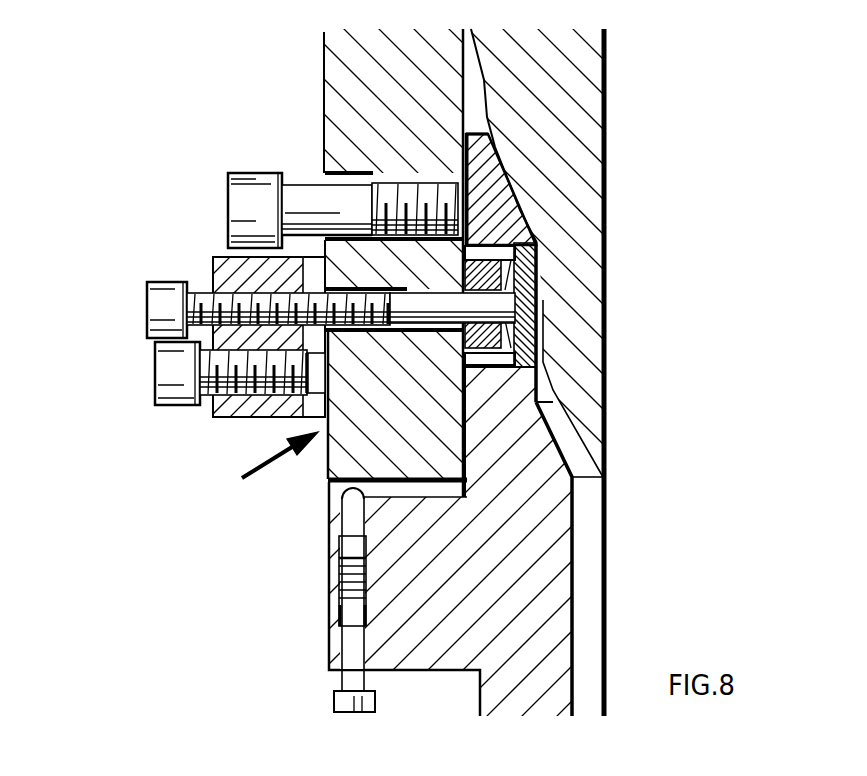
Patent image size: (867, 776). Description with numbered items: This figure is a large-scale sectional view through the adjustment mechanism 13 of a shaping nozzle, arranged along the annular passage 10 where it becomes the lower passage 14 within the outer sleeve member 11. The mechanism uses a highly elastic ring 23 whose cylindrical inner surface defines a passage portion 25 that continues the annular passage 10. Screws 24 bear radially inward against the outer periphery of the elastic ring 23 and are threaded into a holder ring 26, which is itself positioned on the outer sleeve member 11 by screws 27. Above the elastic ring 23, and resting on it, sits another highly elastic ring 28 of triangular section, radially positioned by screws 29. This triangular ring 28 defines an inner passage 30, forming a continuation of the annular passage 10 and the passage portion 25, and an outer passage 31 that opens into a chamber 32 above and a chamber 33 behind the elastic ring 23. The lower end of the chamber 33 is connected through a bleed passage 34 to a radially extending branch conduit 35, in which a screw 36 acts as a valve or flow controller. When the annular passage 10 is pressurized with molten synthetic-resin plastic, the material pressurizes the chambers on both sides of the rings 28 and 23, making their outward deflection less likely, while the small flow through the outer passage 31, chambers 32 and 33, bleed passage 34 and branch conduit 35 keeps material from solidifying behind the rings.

The annular passage 10 is at (468, 49).
The outer sleeve member 11 is at (323, 98).
The adjustment mechanism 13 is at (262, 472).
The passage 14 is at (572, 438).
The elastic ring 23 is at (528, 265).
The screws 24 is at (158, 307).
The passage portion 25 is at (537, 288).
The holder ring 26 is at (233, 278).
The screws 27 is at (172, 370).
The elastic ring of triangular section 28 is at (488, 195).
The screws 29 is at (227, 185).
The inner passage 30 is at (482, 145).
The outer passage 31 is at (467, 163).
The chamber 32 is at (490, 253).
The chamber 33 is at (512, 328).
The bleed passage 34 is at (500, 417).
The branch conduit 35 is at (395, 488).
The screw 36 is at (349, 630).